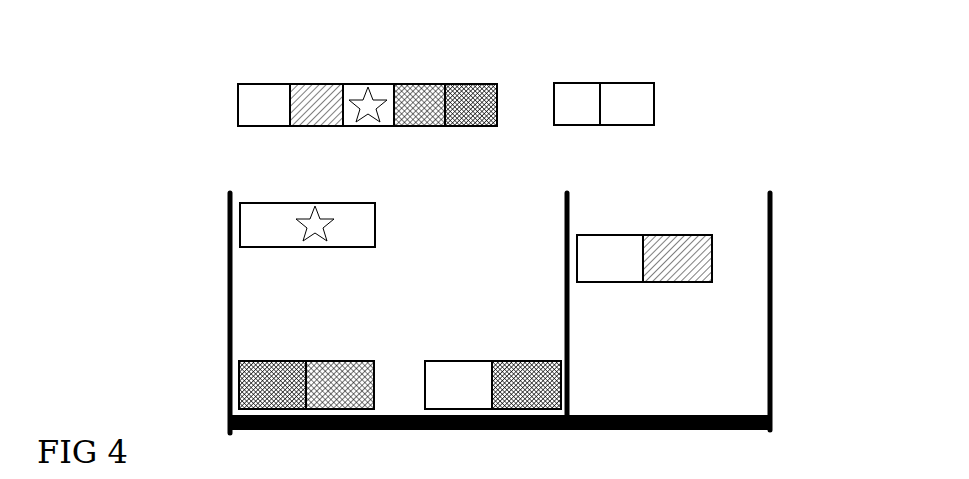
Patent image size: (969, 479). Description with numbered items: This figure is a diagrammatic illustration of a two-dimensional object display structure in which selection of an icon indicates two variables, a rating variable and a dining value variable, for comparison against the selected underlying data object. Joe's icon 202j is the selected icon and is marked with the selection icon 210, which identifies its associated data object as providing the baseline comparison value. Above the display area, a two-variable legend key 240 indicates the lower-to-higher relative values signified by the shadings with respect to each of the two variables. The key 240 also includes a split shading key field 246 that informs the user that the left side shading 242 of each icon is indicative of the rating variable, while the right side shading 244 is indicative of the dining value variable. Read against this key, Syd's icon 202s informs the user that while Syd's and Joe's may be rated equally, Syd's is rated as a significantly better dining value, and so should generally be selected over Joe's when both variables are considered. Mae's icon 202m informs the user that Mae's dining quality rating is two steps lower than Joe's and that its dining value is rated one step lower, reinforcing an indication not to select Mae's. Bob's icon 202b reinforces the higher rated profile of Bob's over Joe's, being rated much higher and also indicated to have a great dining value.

The two-variable legend key 240 is at (208, 72).
The left side shading 242 is at (578, 125).
The right side shading 244 is at (628, 125).
The split shading key field 246 is at (680, 90).
The selection icon 210 is at (313, 203).
The Joe's icon 202j is at (348, 247).
The Bob's icon 202b is at (326, 361).
The Syd's icon 202s is at (477, 361).
The Mae's icon 202m is at (645, 282).